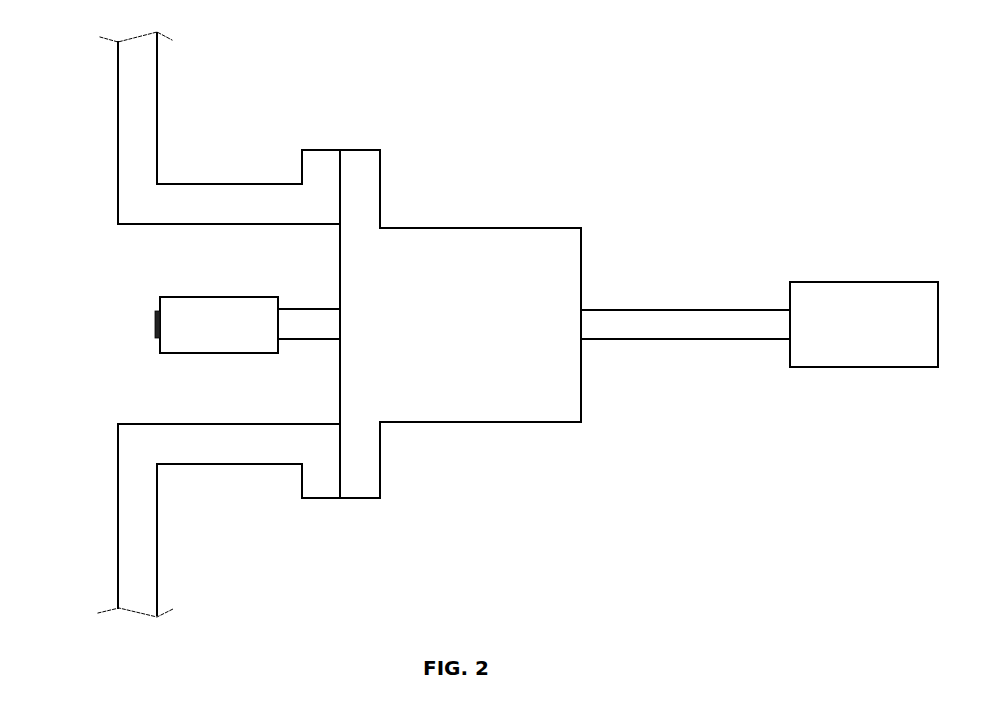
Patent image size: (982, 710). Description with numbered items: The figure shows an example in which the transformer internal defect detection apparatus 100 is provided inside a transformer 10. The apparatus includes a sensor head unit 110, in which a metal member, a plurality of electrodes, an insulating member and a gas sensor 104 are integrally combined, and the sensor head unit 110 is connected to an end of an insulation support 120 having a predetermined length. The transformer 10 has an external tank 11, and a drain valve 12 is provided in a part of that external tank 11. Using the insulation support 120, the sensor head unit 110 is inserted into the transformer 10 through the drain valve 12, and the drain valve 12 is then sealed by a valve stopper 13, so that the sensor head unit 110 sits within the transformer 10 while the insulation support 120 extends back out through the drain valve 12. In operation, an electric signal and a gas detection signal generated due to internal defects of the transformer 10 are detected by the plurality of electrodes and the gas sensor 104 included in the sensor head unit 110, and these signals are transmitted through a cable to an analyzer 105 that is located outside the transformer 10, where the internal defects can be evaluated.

The transformer 10 is at (95, 130).
The external tank 11 is at (148, 92).
The drain valve 12 is at (320, 148).
The valve stopper 13 is at (470, 227).
The transformer internal defect detection apparatus 100 is at (774, 214).
The gas sensor 104 is at (154, 325).
The analyzer 105 is at (863, 282).
The sensor head unit 110 is at (168, 293).
The insulation support 120 is at (693, 308).